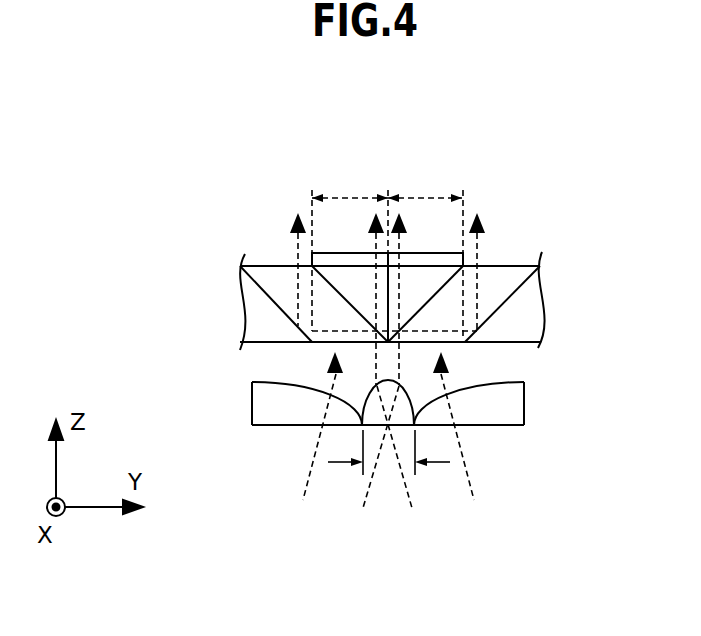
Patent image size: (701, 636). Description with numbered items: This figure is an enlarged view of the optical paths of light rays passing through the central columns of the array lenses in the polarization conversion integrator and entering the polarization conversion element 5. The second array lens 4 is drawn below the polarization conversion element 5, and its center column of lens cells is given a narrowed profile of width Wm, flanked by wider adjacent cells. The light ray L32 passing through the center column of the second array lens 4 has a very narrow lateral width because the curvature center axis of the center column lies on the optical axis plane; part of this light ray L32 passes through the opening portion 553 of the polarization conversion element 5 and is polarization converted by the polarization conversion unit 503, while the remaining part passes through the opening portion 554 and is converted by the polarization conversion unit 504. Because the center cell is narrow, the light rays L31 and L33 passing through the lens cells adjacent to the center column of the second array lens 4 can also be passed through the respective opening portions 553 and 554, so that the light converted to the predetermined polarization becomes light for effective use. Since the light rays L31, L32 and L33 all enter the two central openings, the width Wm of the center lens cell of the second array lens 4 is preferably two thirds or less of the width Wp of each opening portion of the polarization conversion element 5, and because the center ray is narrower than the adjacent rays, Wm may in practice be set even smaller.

The polarization conversion element 5 is at (507, 266).
The second array lens 4 is at (510, 425).
The polarization conversion unit 503 is at (388, 160).
The polarization conversion unit 504 is at (532, 158).
The opening portion 553 is at (333, 342).
The opening portion 554 is at (452, 342).
The light ray L31 is at (308, 492).
The light ray L32 is at (390, 503).
The light ray L33 is at (468, 493).
The width of the opening portion Wp is at (387, 182).
The width of the constituent lens cell Wm is at (395, 466).